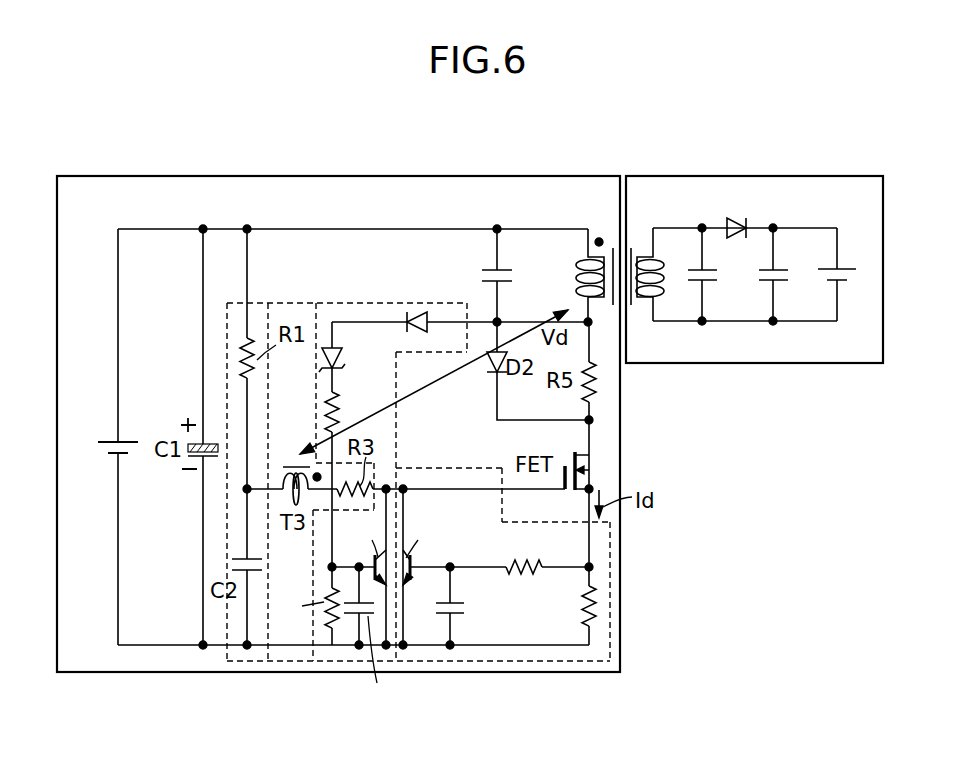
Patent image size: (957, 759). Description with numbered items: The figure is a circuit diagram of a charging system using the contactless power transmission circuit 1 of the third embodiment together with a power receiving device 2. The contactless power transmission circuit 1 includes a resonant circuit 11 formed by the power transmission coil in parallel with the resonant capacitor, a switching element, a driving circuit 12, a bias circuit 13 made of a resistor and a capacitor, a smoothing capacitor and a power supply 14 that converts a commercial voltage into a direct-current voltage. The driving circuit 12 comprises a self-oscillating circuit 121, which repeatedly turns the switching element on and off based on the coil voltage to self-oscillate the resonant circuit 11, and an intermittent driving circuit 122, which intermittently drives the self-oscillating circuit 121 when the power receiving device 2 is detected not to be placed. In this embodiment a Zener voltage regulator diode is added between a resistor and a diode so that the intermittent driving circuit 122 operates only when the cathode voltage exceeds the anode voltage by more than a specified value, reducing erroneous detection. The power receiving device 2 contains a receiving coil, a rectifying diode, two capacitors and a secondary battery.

The contactless power transmission circuit 1 is at (478, 176).
The power receiving device 2 is at (817, 176).
The resonant circuit 11 is at (540, 226).
The driving circuit 12 is at (455, 388).
The bias circuit 13 is at (262, 303).
The power supply 14 is at (125, 440).
The self-oscillating circuit 121 is at (437, 447).
The intermittent driving circuit 122 is at (398, 420).